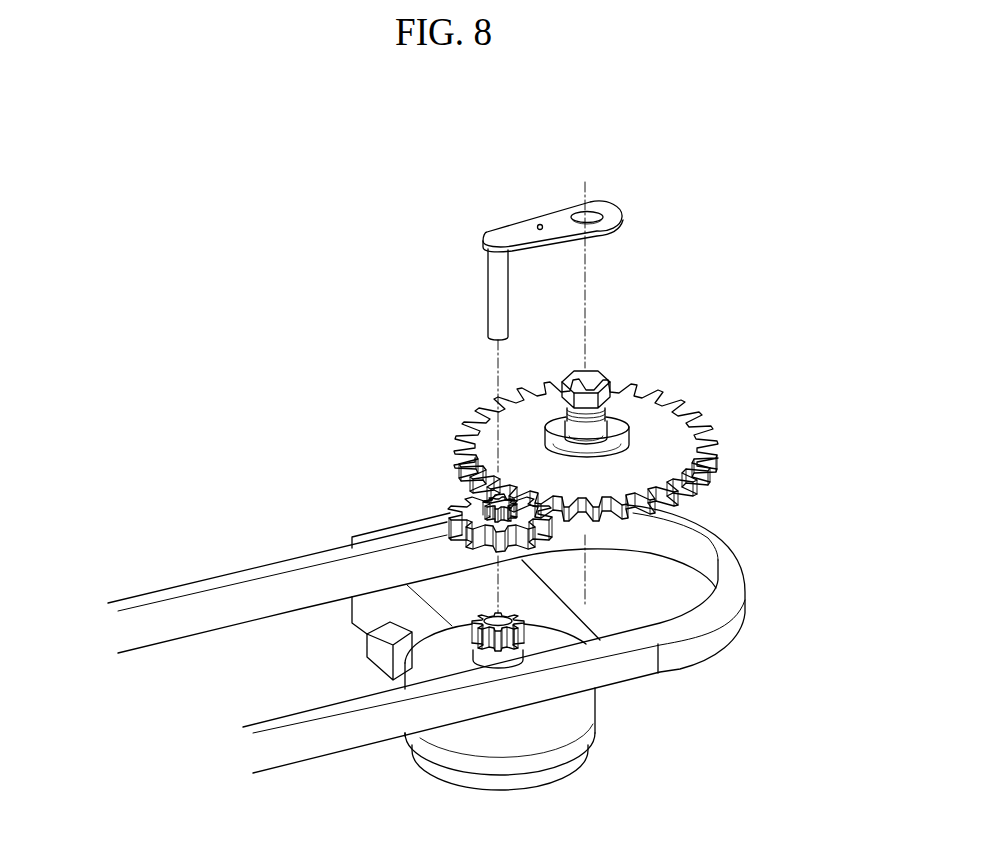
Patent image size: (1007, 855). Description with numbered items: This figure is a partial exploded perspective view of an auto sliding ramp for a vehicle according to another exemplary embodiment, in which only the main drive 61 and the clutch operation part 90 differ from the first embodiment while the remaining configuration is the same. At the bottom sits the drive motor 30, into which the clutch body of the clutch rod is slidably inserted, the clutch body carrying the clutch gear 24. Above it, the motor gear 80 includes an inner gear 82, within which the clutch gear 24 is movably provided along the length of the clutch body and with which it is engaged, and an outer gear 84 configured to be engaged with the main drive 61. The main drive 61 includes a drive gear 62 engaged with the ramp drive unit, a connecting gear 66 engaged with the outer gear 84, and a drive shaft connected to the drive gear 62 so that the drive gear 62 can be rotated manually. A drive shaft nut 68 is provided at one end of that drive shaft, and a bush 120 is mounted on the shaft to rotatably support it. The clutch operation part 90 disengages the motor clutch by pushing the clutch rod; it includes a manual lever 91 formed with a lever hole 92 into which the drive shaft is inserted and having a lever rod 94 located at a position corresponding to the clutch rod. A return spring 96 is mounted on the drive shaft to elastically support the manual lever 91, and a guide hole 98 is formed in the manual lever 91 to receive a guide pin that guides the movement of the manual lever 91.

The clutch gear 24 is at (524, 632).
The drive motor 30 is at (535, 718).
The main drive 61 is at (620, 407).
The drive gear 62 is at (708, 468).
The connecting gear 66 is at (628, 517).
The drive shaft nut 68 is at (594, 377).
The motor gear 80 is at (427, 499).
The inner gear 82 is at (483, 500).
The outer gear 84 is at (452, 506).
The clutch operation part 90 is at (520, 240).
The manual lever 91 is at (503, 228).
The lever hole 92 is at (590, 212).
The lever rod 94 is at (497, 292).
The return spring 96 is at (636, 389).
The guide hole 98 is at (541, 224).
The bush 120 is at (598, 427).